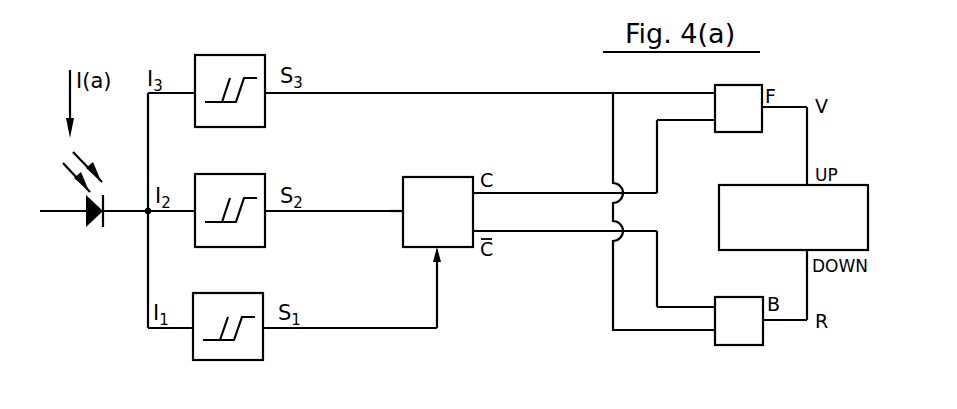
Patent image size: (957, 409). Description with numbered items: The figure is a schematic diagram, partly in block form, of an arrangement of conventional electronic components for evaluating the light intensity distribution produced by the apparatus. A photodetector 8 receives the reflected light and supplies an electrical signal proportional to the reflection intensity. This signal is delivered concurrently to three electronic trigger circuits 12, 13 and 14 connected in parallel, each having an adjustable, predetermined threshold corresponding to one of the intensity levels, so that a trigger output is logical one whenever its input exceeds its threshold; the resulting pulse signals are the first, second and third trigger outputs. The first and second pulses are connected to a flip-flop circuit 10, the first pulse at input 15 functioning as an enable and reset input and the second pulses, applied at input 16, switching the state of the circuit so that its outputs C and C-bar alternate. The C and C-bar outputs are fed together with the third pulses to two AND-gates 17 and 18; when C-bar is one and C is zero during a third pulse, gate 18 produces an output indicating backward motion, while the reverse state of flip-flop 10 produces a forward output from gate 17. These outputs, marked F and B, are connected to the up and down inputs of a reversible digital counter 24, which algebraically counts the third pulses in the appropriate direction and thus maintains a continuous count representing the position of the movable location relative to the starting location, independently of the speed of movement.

The photodetector 8 is at (92, 219).
The flip-flop circuit 10 is at (421, 164).
The electronic trigger circuit 12 is at (209, 55).
The electronic trigger circuit 13 is at (210, 174).
The electronic trigger circuit 14 is at (217, 280).
The flip-flop data input 15 is at (403, 201).
The flip-flop clock input 16 is at (440, 248).
The AND-gate 17 is at (722, 132).
The AND-gate 18 is at (724, 345).
The reversible digital counter 24 is at (719, 222).